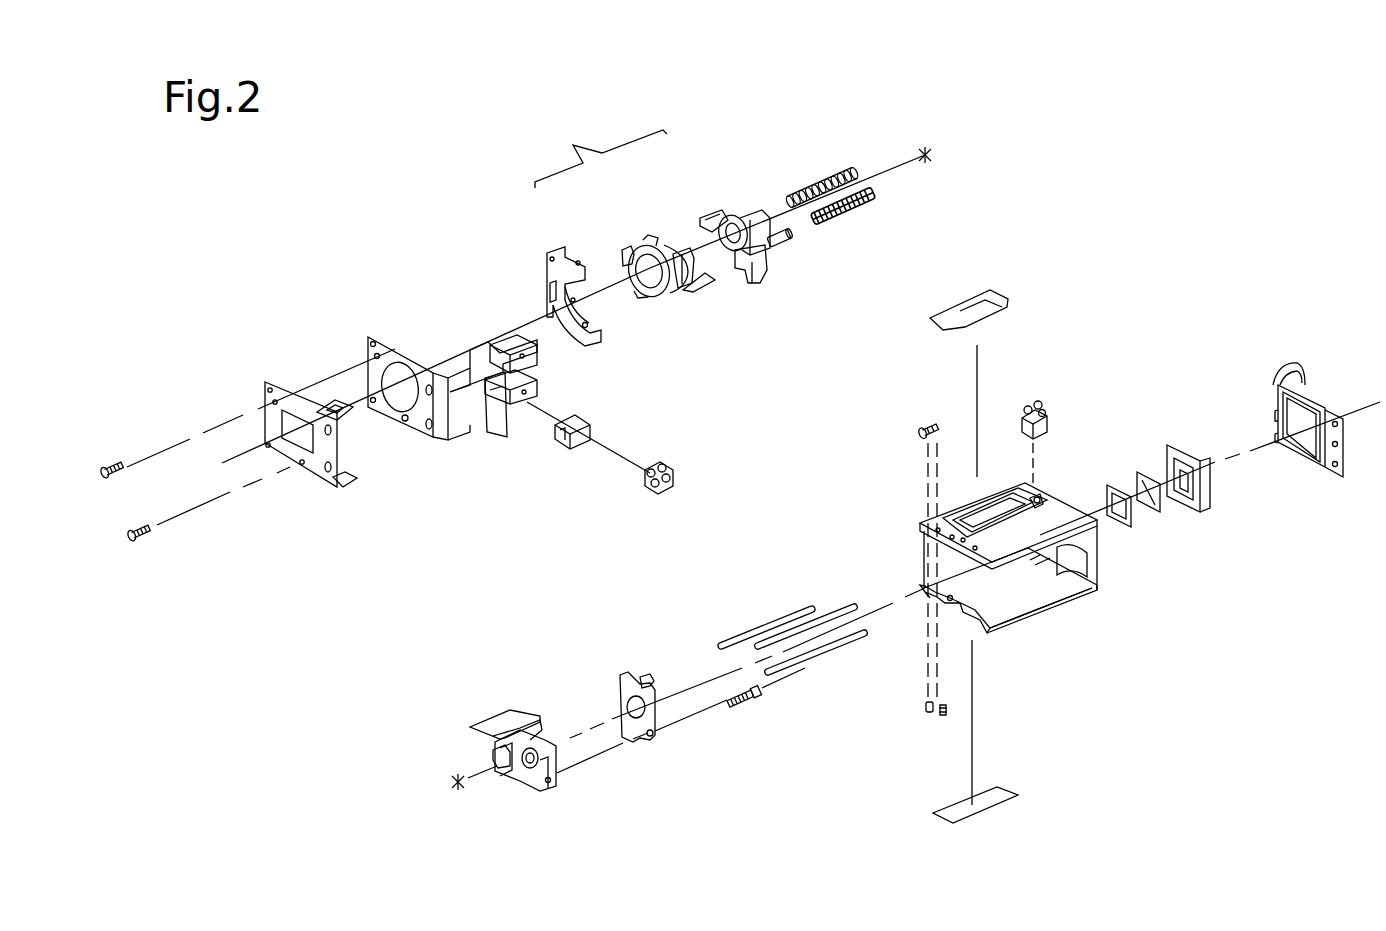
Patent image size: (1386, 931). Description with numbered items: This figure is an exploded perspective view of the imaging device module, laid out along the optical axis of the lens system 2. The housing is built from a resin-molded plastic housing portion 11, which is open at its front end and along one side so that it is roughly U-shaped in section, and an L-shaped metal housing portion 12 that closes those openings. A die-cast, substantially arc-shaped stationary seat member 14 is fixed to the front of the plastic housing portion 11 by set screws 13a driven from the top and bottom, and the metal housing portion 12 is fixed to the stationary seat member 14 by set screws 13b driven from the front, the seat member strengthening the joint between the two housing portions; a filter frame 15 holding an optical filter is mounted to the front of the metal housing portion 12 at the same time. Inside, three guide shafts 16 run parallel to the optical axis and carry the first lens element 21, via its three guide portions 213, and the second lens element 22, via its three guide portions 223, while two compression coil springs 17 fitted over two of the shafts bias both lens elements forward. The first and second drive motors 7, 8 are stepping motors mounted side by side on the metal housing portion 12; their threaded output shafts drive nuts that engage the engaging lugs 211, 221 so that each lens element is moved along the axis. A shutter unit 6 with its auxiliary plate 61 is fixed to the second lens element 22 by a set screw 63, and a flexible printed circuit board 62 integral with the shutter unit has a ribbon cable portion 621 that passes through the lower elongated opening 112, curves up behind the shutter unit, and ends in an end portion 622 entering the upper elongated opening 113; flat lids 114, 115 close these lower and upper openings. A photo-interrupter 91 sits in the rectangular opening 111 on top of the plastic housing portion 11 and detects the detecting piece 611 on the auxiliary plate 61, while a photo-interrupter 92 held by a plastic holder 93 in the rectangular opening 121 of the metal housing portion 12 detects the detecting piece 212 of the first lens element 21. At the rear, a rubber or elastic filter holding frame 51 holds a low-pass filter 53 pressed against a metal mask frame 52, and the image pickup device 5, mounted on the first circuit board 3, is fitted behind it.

The lens system 2 is at (601, 158).
The first circuit board 3 is at (1300, 372).
The image pickup device 5 is at (1303, 458).
The shutter unit 6 is at (546, 790).
The first drive motor 7 is at (530, 378).
The second drive motor 8 is at (523, 343).
The plastic housing portion 11 is at (1073, 603).
The metal housing portion 12 is at (397, 343).
The set screws 13a is at (925, 424).
The set screws 13b is at (123, 480).
The stationary seat member 14 is at (543, 272).
The filter frame 15 is at (290, 393).
The guide shafts 16 is at (807, 660).
The compression coil springs 17 is at (848, 193).
The first lens element 21 is at (656, 298).
The second lens element 22 is at (740, 213).
The filter holding frame 51 is at (1195, 507).
The mask frame 52 is at (1122, 522).
The low-pass filter 53 is at (1155, 508).
The auxiliary plate 61 is at (620, 687).
The flexible printed circuit board 62 is at (540, 727).
The set screw 63 is at (747, 703).
The photo-interrupter 91 is at (1047, 420).
The photo-interrupter 92 is at (670, 468).
The plastic holder 93 is at (590, 424).
The rectangular opening 111 is at (1040, 497).
The lower elongated opening 112 is at (1000, 580).
The upper elongated opening 113 is at (1002, 497).
The flat lid 114 is at (1003, 790).
The flat lid 115 is at (993, 300).
The rectangular opening 121 is at (497, 420).
The engaging lug 211 is at (682, 250).
The detecting piece 212 is at (708, 287).
The guide portions 213 is at (620, 252).
The engaging lug 221 is at (760, 277).
The guide portions 223 is at (713, 217).
The detecting piece 611 is at (650, 680).
The ribbon cable portion 621 is at (487, 712).
The end portion 622 is at (480, 747).